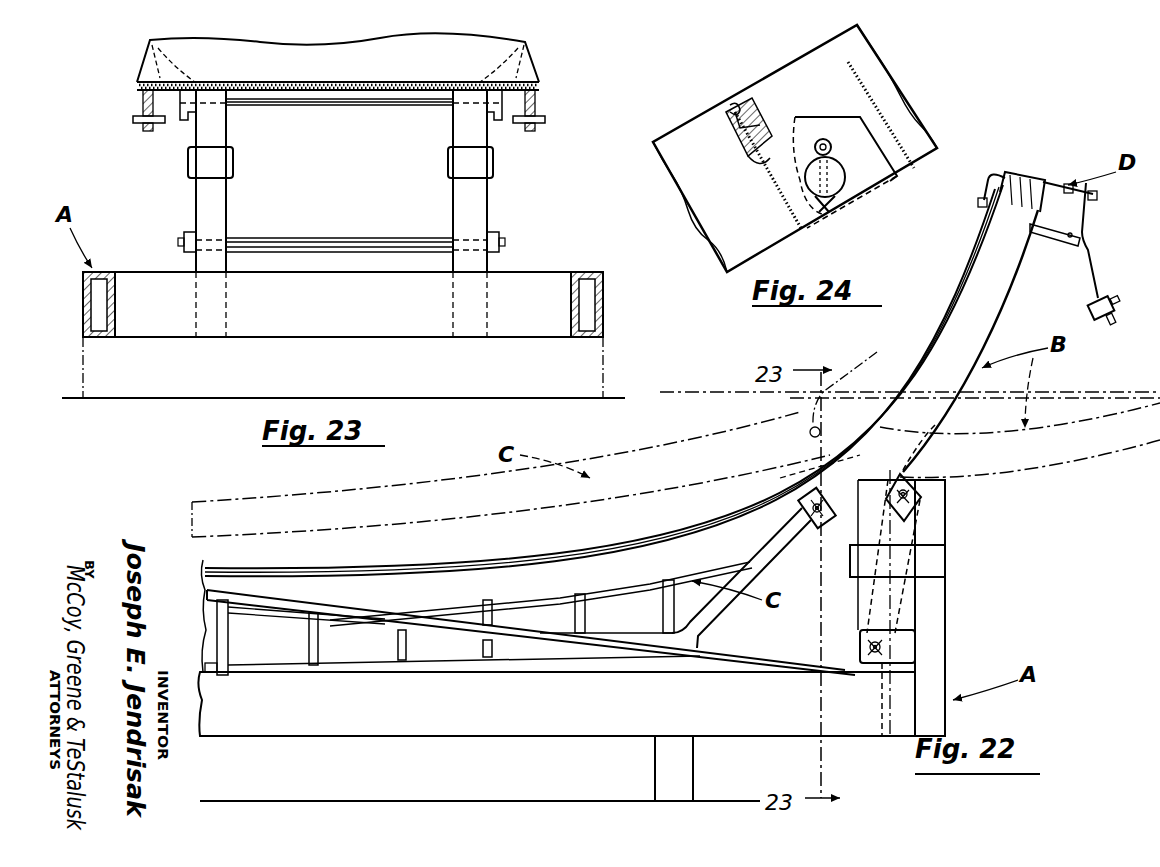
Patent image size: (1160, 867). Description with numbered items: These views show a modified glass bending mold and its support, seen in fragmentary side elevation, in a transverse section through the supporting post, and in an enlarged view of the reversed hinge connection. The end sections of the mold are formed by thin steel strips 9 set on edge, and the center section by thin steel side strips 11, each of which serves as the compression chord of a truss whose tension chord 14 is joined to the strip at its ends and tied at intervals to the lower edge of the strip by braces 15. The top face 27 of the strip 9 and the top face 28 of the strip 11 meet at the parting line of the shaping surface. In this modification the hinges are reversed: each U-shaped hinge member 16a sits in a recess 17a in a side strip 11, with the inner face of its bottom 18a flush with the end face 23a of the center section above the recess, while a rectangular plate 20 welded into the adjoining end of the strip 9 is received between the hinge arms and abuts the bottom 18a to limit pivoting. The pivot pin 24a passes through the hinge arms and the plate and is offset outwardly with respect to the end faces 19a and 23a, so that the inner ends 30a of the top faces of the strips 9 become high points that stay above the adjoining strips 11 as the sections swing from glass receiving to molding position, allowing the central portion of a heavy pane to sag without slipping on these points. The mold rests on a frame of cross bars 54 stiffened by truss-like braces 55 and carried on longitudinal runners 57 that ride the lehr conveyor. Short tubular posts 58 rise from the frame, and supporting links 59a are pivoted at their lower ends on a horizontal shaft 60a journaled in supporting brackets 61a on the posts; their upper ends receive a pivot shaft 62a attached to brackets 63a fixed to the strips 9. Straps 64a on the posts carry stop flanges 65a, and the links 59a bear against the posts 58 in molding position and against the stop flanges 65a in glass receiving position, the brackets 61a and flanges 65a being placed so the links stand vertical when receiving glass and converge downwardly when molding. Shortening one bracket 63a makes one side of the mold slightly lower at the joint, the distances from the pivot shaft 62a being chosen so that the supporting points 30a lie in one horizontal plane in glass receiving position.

In FIG. 23, the thin steel strip 9 is at (140, 98).
In FIG. 24, the thin steel strip 9 is at (925, 118).
In FIG. 24, the side strip 11 is at (714, 232).
In FIG. 22, the side strip 11 is at (456, 488).
In FIG. 22, the tension chord 14 is at (712, 616).
In FIG. 22, the brace 15 is at (582, 600).
In FIG. 24, the hinge member 16a is at (848, 212).
In FIG. 24, the recess 17a is at (752, 160).
In FIG. 24, the bottom 18a is at (742, 140).
In FIG. 24, the end face 19a is at (722, 108).
In FIG. 24, the rectangular plate 20 is at (905, 166).
In FIG. 24, the end face 23a is at (738, 108).
In FIG. 23, the pivot pin 24a is at (133, 121).
In FIG. 24, the pivot pin 24a is at (845, 180).
In FIG. 22, the pivot pin 24a is at (808, 500).
In FIG. 24, the top face 27 is at (778, 72).
In FIG. 24, the top face 28 is at (680, 132).
In FIG. 22, the inner end of top face 30a is at (927, 322).
In FIG. 23, the cross bar 54 is at (604, 300).
In FIG. 22, the cross bar 54 is at (432, 736).
In FIG. 22, the truss-like brace 55 is at (645, 660).
In FIG. 23, the longitudinal runner 57 is at (604, 352).
In FIG. 22, the longitudinal runner 57 is at (655, 770).
In FIG. 22, the post 58 is at (945, 598).
In FIG. 23, the supporting link 59a is at (202, 208).
In FIG. 22, the supporting link 59a is at (918, 532).
In FIG. 23, the horizontal shaft 60a is at (358, 238).
In FIG. 22, the horizontal shaft 60a is at (868, 663).
In FIG. 23, the supporting bracket 61a is at (185, 236).
In FIG. 22, the supporting bracket 61a is at (905, 650).
In FIG. 23, the pivot shaft 62a is at (350, 106).
In FIG. 22, the pivot shaft 62a is at (922, 494).
In FIG. 23, the bracket 63a is at (172, 58).
In FIG. 22, the bracket 63a is at (900, 470).
In FIG. 22, the strap 64a is at (930, 565).
In FIG. 23, the stop flange 65a is at (202, 165).
In FIG. 22, the stop flange 65a is at (850, 560).